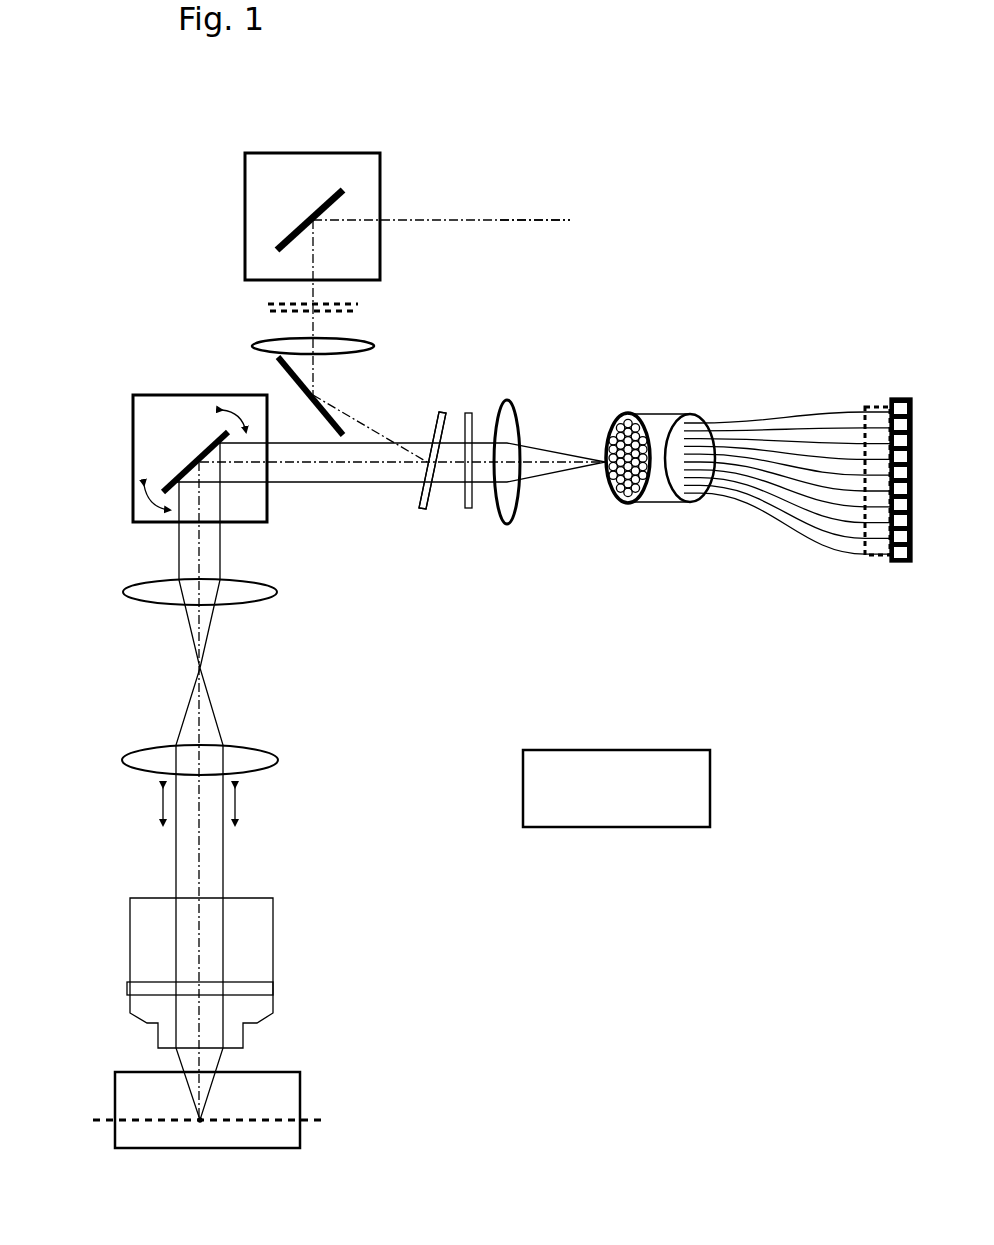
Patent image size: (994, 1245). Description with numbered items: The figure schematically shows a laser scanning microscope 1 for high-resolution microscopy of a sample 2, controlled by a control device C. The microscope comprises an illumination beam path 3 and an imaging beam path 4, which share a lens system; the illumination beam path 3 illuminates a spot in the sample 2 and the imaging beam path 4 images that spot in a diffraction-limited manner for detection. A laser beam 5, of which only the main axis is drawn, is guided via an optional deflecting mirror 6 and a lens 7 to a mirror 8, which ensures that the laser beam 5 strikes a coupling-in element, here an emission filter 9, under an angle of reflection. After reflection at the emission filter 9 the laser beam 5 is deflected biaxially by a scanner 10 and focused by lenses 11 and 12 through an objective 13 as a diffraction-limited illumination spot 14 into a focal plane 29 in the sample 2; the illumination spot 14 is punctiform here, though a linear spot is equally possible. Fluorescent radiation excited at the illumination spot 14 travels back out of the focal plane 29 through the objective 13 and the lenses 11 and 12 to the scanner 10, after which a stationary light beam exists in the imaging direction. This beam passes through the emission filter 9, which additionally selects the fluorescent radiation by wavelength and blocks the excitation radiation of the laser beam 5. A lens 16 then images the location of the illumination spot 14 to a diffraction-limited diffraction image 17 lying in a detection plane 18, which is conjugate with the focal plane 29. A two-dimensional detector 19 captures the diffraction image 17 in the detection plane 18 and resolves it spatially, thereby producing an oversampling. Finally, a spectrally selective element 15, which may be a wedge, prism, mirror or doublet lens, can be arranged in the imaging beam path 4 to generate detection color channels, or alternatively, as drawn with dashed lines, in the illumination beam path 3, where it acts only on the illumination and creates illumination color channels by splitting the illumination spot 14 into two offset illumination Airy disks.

The laser scanning microscope 1 is at (582, 983).
The sample 2 is at (287, 1103).
The illumination beam path 3 is at (190, 255).
The imaging beam path 4 is at (591, 570).
The laser beam 5 is at (502, 220).
The deflecting mirror 6 is at (279, 153).
The lens 7 is at (373, 346).
The mirror 8 is at (290, 373).
The emission filter 9 is at (430, 503).
The scanner 10 is at (252, 513).
The lens 11 is at (262, 598).
The lens 12 is at (278, 758).
The objective 13 is at (273, 998).
The illumination spot 14 is at (200, 1121).
The spectrally selective element 15 is at (268, 304).
The lens 16 is at (468, 413).
The diffraction image 17 is at (600, 443).
The detection plane 18 is at (633, 503).
The two-dimensional detector 19 is at (765, 433).
The focal plane 29 is at (328, 1120).
The control device C is at (697, 780).